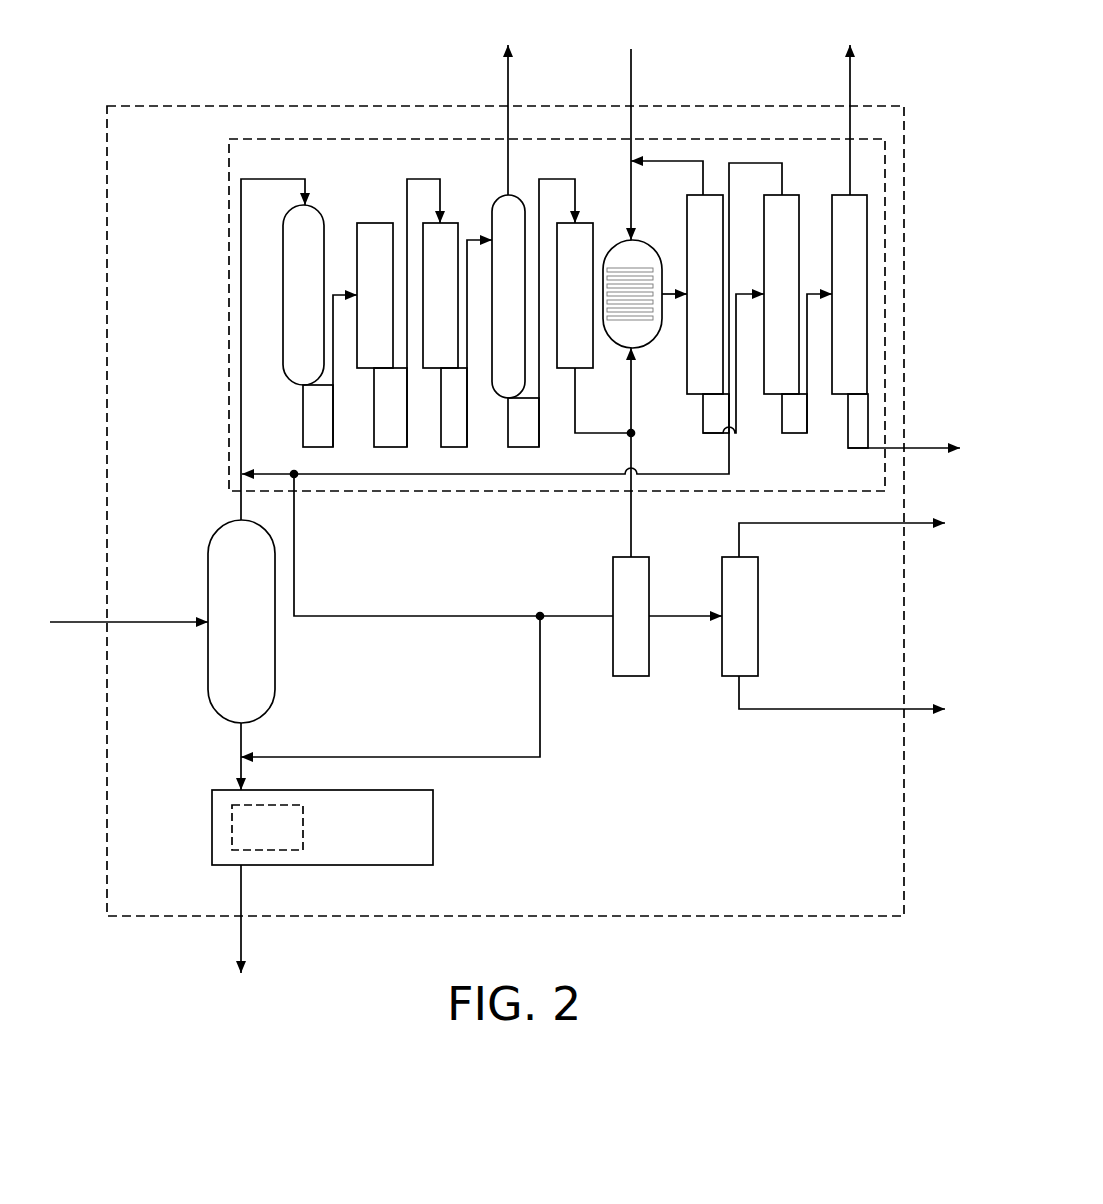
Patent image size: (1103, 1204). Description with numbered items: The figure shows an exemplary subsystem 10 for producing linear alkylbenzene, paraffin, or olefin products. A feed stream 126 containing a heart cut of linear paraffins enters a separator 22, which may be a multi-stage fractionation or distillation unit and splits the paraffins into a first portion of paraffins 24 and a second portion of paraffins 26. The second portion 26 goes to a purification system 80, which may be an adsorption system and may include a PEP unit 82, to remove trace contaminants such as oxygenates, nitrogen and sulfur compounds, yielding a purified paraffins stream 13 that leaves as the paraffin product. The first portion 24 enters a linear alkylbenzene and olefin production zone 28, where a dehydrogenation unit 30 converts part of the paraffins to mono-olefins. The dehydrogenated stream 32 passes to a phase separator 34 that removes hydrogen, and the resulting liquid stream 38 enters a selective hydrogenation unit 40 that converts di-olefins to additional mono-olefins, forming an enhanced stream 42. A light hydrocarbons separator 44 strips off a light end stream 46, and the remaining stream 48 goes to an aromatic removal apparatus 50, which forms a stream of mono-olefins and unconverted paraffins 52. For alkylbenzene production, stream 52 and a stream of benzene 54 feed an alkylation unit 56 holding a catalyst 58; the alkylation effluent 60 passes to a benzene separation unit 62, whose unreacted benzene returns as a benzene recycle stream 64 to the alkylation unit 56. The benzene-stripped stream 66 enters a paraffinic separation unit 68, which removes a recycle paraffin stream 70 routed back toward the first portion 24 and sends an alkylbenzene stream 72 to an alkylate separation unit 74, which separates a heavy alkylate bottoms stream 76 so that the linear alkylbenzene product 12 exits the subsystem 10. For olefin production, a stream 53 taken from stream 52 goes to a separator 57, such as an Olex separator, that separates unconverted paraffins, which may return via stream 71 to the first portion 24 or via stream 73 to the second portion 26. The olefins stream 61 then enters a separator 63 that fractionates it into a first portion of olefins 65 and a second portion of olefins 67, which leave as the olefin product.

The subsystem 10 is at (880, 105).
The linear alkylbenzene product 12 is at (849, 70).
The purified paraffins stream 13 is at (243, 890).
The separator 22 is at (208, 542).
The first portion of paraffins 24 is at (240, 502).
The second portion of paraffins 26 is at (243, 737).
The linear alkylbenzene and olefin production zone 28 is at (782, 139).
The dehydrogenation unit 30 is at (302, 203).
The dehydrogenated stream 32 is at (322, 448).
The phase separator 34 is at (388, 222).
The liquid stream 38 is at (392, 448).
The selective hydrogenation unit 40 is at (435, 217).
The enhanced stream 42 is at (452, 448).
The light hydrocarbons separator 44 is at (500, 195).
The light end stream 46 is at (507, 118).
The stream 48 is at (520, 448).
The aromatic removal apparatus 50 is at (575, 217).
The stream of mono-olefins and unconverted paraffins 52 is at (598, 433).
The stream 53 is at (630, 545).
The stream of benzene 54 is at (630, 119).
The alkylation unit 56 is at (622, 350).
The separator 57 is at (613, 597).
The catalyst 58 is at (650, 272).
The alkylation effluent 60 is at (665, 325).
The olefins stream 61 is at (685, 613).
The benzene separation unit 62 is at (714, 193).
The separator 63 is at (732, 555).
The benzene recycle stream 64 is at (673, 160).
The first portion of olefins 65 is at (846, 523).
The benzene-stripped stream 66 is at (703, 419).
The second portion of olefins 67 is at (836, 709).
The paraffinic separation unit 68 is at (782, 194).
The recycle paraffin stream 70 is at (657, 477).
The stream 71 is at (457, 617).
The alkylbenzene stream 72 is at (797, 433).
The stream 73 is at (541, 716).
The alkylate separation unit 74 is at (842, 194).
The heavy alkylate bottoms stream 76 is at (935, 460).
The purification system 80 is at (433, 828).
The PEP unit 82 is at (267, 827).
The stream 126 is at (70, 618).